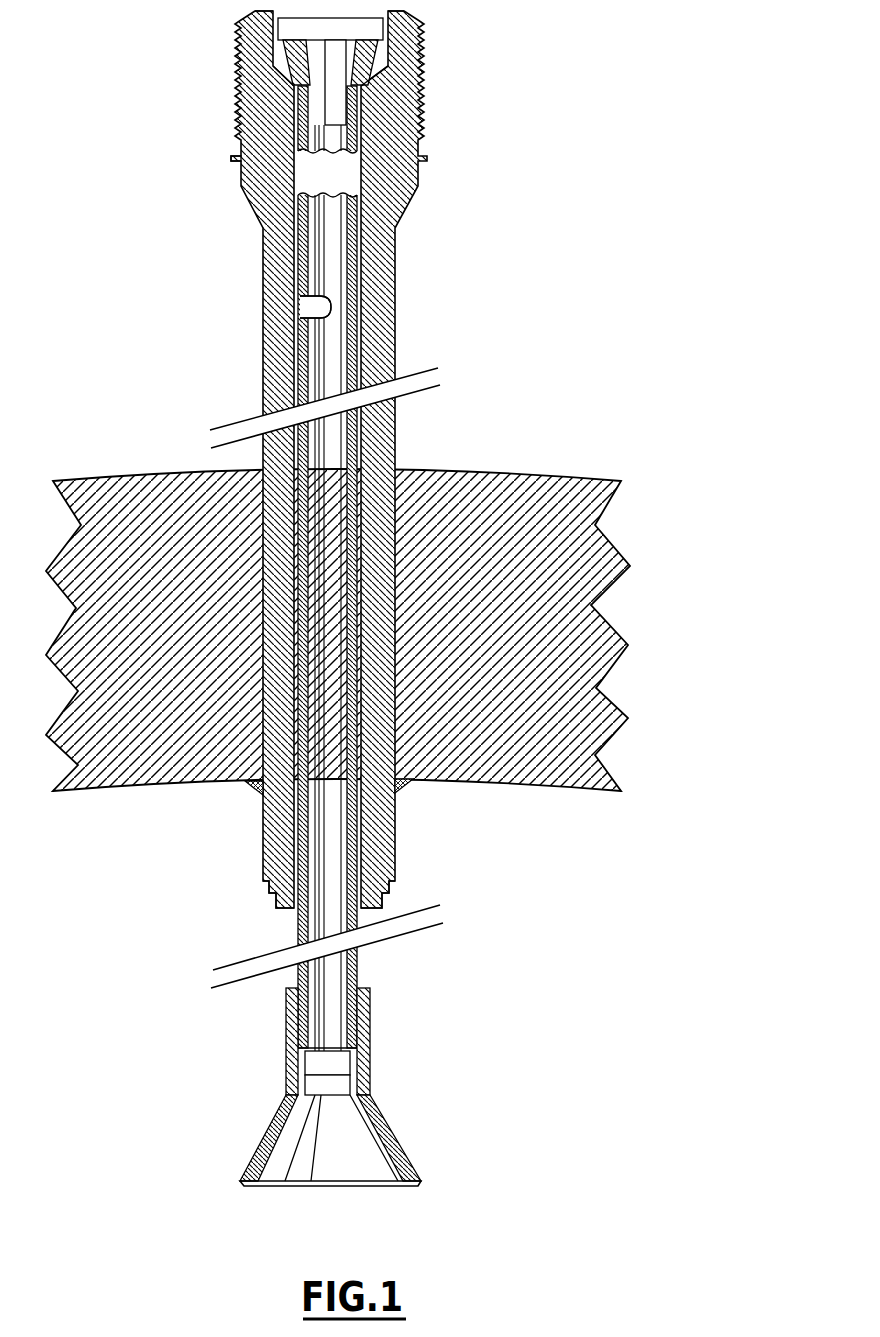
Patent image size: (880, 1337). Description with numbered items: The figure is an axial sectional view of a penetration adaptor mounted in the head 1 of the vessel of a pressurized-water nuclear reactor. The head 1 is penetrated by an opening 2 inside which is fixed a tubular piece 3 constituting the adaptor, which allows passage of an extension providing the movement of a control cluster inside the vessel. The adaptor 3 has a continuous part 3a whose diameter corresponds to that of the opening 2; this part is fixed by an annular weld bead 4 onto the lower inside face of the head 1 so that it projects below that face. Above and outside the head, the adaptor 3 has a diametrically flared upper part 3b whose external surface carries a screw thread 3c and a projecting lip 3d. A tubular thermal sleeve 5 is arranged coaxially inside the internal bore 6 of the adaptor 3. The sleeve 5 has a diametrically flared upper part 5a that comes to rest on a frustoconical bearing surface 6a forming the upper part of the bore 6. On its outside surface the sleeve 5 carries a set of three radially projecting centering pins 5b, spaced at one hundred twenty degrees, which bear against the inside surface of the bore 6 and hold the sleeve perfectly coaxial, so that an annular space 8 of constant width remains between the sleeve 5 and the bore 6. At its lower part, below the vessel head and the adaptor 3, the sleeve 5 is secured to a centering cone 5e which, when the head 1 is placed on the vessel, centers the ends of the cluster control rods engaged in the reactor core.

The head 1 is at (110, 487).
The opening 2 is at (232, 488).
The tubular piece 3 is at (252, 258).
The continuous part 3a is at (385, 838).
The diametrically flared upper part 3b is at (385, 110).
The screw thread 3c is at (230, 100).
The lip 3d is at (225, 152).
The annular weld bead 4 is at (243, 783).
The tubular thermal sleeve 5 is at (356, 318).
The diametrically flared upper part 5a is at (377, 52).
The centering pins 5b is at (298, 300).
The centering cone 5e is at (257, 1152).
The internal bore 6 is at (334, 173).
The frustoconical bearing surface 6a is at (273, 73).
The annular space 8 is at (355, 465).